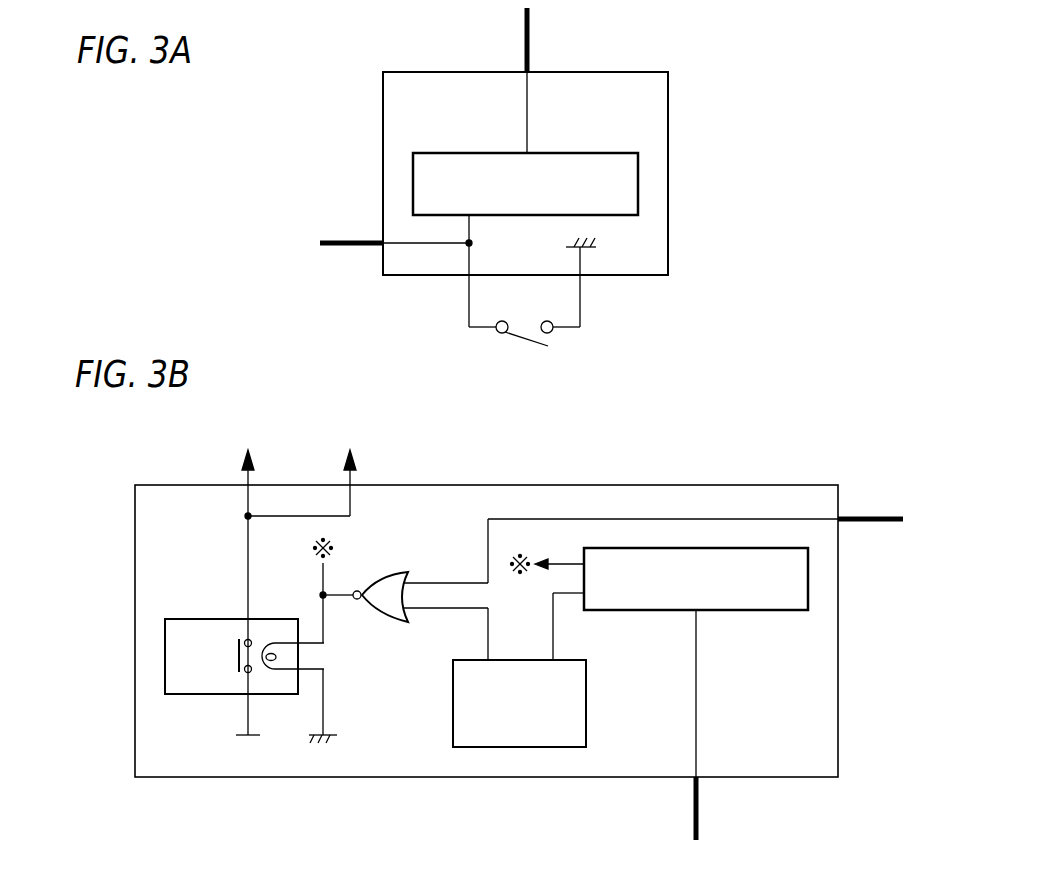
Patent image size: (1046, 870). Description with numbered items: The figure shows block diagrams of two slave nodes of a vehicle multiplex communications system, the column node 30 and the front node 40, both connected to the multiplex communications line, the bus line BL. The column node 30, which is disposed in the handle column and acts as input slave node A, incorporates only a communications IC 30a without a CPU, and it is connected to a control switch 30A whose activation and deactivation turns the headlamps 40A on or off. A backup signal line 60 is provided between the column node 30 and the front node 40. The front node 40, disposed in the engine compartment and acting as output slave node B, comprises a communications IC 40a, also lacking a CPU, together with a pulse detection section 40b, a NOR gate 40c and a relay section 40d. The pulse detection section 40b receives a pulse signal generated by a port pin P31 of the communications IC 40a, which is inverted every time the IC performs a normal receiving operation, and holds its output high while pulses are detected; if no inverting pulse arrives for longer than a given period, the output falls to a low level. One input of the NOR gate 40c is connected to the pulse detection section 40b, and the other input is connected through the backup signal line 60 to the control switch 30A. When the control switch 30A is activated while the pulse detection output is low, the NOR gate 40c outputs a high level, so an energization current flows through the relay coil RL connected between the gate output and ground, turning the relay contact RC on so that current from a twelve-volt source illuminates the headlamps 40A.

In FIG. 3A, the column node 30 is at (668, 95).
In FIG. 3A, the communications IC 30a is at (606, 153).
In FIG. 3A, the control switch 30A is at (529, 350).
In FIG. 3A, the backup signal line 60 is at (353, 250).
In FIG. 3B, the backup signal line 60 is at (872, 517).
In FIG. 3A, the bus line BL is at (530, 43).
In FIG. 3B, the bus line BL is at (699, 812).
In FIG. 3B, the front node 40 is at (840, 695).
In FIG. 3B, the communications IC 40a is at (763, 612).
In FIG. 3B, the pulse detection section 40b is at (588, 705).
In FIG. 3B, the NOR gate 40c is at (388, 622).
In FIG. 3B, the relay section 40d is at (244, 632).
In FIG. 3B, the headlamps 40A is at (298, 558).
In FIG. 3B, the relay coil RL is at (290, 651).
In FIG. 3B, the relay contact RC is at (232, 651).
In FIG. 3B, the port pin P31 is at (584, 583).